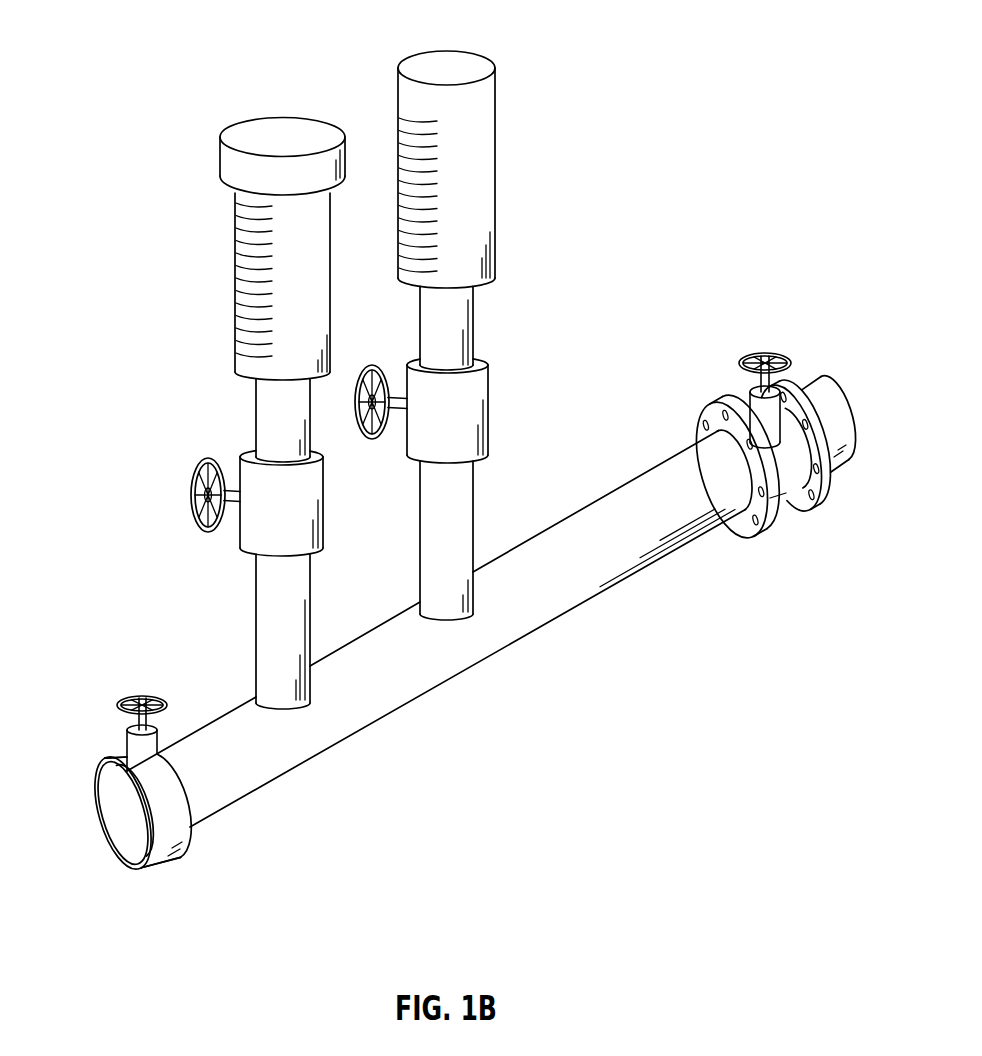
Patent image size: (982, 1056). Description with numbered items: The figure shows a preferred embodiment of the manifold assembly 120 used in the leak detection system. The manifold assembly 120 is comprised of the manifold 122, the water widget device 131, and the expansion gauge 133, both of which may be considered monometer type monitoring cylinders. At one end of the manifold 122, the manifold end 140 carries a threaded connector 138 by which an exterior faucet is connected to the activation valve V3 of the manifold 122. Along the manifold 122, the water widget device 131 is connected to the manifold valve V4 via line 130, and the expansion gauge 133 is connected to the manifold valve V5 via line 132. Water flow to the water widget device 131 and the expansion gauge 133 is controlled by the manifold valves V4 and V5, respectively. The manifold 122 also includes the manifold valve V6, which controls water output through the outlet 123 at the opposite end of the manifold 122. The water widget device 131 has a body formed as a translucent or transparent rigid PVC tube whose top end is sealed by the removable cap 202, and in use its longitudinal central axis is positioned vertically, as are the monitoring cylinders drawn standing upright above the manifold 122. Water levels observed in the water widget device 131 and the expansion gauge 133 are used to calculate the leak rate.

The manifold assembly 120 is at (788, 646).
The manifold 122 is at (600, 497).
The outlet 123 is at (853, 420).
The line 130 is at (256, 425).
The water widget device 131 is at (235, 278).
The line 132 is at (473, 318).
The expansion gauge 133 is at (495, 148).
The threaded connector 138 is at (120, 860).
The manifold end 140 is at (90, 823).
The removable cap 202 is at (220, 161).
The activation valve V3 is at (127, 752).
The manifold valve V4 is at (240, 530).
The manifold valve V5 is at (488, 370).
The manifold valve V6 is at (787, 397).